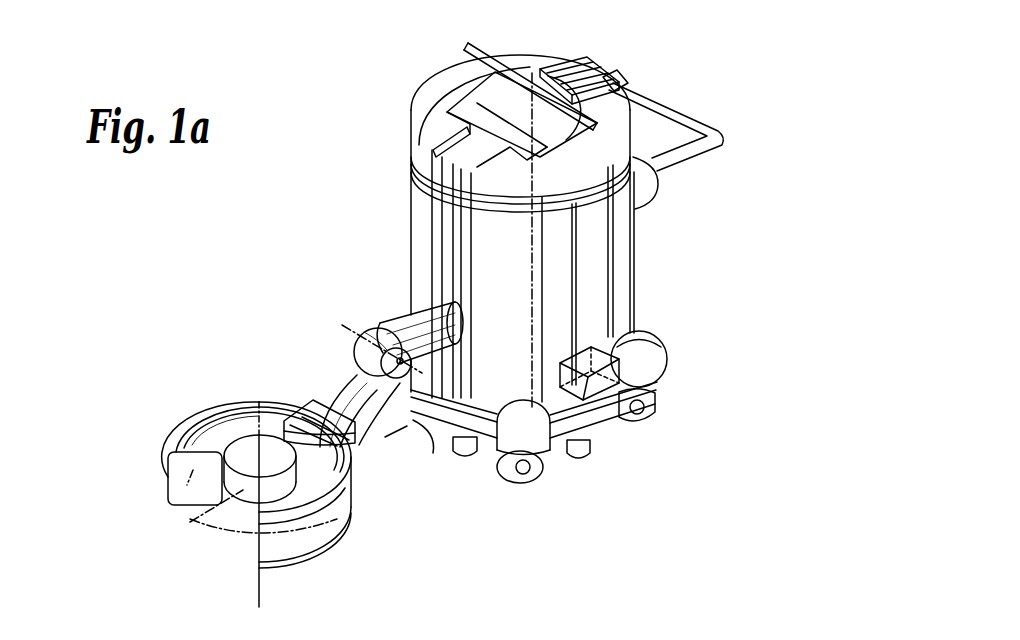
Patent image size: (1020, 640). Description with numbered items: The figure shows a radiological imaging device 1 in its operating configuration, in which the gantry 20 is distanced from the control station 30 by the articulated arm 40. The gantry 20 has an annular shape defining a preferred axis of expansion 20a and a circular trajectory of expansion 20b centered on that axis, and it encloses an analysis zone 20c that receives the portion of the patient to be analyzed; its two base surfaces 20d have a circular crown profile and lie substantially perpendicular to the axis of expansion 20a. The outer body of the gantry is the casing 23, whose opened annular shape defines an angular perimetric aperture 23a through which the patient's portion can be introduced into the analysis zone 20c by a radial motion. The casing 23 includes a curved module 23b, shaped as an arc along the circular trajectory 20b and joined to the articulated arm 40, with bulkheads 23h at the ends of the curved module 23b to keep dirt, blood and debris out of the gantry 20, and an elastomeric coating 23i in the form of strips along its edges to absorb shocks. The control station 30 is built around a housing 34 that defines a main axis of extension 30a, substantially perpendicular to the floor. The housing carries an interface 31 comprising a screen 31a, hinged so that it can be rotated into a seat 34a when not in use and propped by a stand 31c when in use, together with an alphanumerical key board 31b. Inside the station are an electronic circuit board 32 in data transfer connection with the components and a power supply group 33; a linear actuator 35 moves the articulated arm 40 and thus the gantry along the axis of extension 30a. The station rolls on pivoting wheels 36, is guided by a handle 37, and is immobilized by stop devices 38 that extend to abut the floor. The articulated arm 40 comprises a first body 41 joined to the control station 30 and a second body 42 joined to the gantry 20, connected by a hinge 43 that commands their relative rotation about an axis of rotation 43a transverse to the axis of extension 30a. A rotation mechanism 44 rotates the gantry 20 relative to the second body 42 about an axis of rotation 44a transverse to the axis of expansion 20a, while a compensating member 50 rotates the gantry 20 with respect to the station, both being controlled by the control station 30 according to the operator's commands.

The radiological imaging device 1 is at (268, 88).
The gantry 20 is at (130, 563).
The preferred axis of expansion 20a is at (262, 588).
The circular trajectory of expansion 20b is at (225, 523).
The analysis zone 20c is at (236, 440).
The base surfaces 20d is at (186, 423).
The casing 23 is at (131, 533).
The angular perimetric aperture 23a is at (188, 528).
The curved module 23b is at (323, 521).
The bulkheads 23h is at (170, 500).
The coating 23i is at (160, 448).
The control station 30 is at (741, 383).
The main axis of extension 30a is at (522, 300).
The interface 31 is at (428, 46).
The screen 31a is at (487, 50).
The alphanumerical key board 31b is at (566, 70).
The stand 31c is at (486, 93).
The electronic circuit board 32 is at (583, 350).
The power supply group 33 is at (610, 340).
The housing 34 is at (695, 298).
The seat 34a is at (476, 120).
The linear actuator 35 is at (418, 222).
The pivoting wheels 36 is at (533, 466).
The handle 37 is at (680, 168).
The stop devices 38 is at (447, 455).
The articulated arm 40 is at (280, 243).
The first body 41 is at (393, 291).
The second body 42 is at (373, 458).
The hinge 43 is at (345, 343).
The axis of rotation 43a is at (329, 313).
The rotation mechanism 44 is at (320, 370).
The axis of rotation 44a is at (424, 432).
The compensating member 50 is at (293, 386).